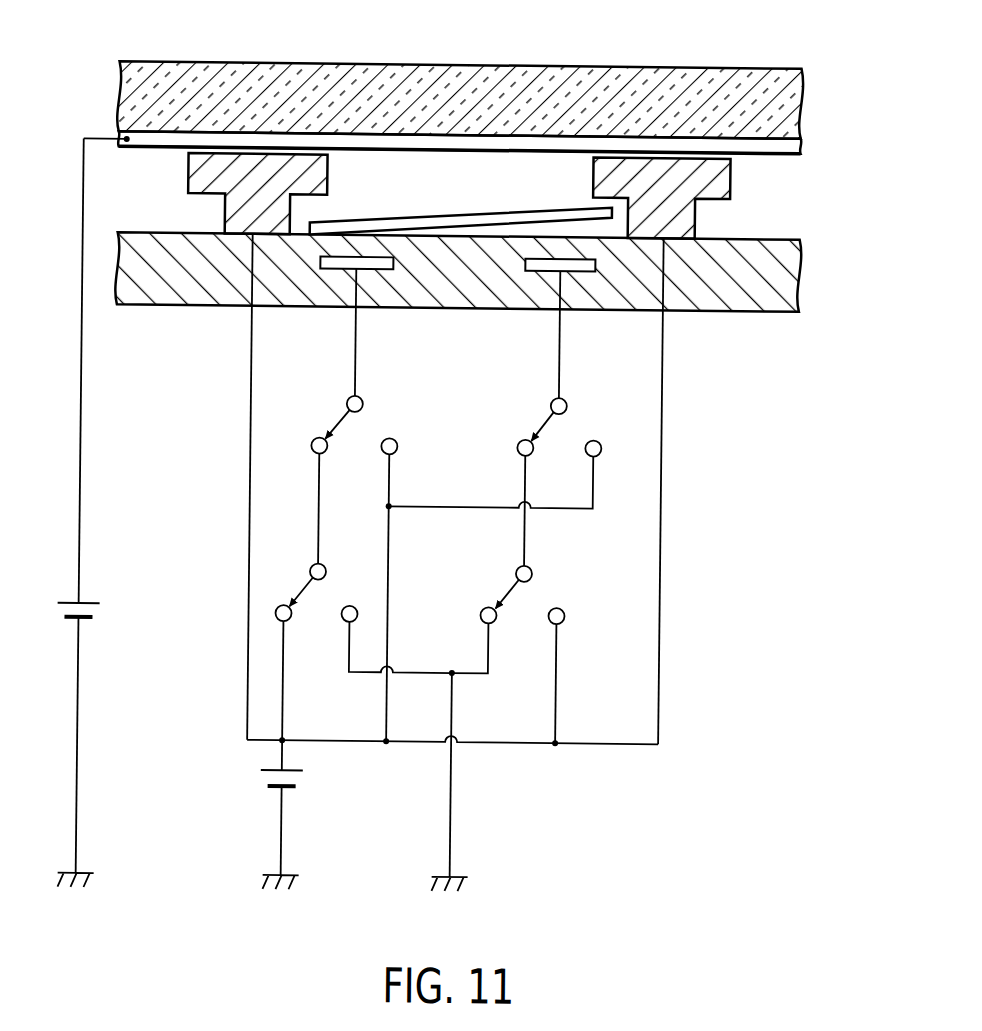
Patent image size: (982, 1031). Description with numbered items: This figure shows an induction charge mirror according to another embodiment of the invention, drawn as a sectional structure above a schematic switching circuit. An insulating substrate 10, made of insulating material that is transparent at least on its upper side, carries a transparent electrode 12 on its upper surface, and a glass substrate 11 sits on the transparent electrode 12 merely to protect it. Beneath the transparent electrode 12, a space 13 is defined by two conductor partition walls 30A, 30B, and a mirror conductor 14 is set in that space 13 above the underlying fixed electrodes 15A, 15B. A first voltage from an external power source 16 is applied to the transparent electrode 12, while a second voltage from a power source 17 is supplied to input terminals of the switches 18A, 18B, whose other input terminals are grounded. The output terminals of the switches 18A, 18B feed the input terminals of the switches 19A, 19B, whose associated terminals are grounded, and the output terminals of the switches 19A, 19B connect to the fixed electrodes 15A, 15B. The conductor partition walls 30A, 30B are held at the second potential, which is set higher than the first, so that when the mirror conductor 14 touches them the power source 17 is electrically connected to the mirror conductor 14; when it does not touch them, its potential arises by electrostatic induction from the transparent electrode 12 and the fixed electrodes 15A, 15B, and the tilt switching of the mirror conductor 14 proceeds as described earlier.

The insulating substrate 10 is at (798, 267).
The glass substrate 11 is at (681, 64).
The transparent electrode 12 is at (805, 139).
The space 13 is at (379, 168).
The mirror conductor 14 is at (404, 214).
The fixed electrode 15A is at (328, 274).
The fixed electrode 15B is at (536, 307).
The external power source 16 is at (67, 632).
The power source 17 is at (263, 784).
The switch 18A is at (338, 591).
The switch 18B is at (553, 590).
The switch 19A is at (372, 429).
The switch 19B is at (577, 427).
The conductor partition wall 30A is at (222, 210).
The conductor partition wall 30B is at (694, 212).